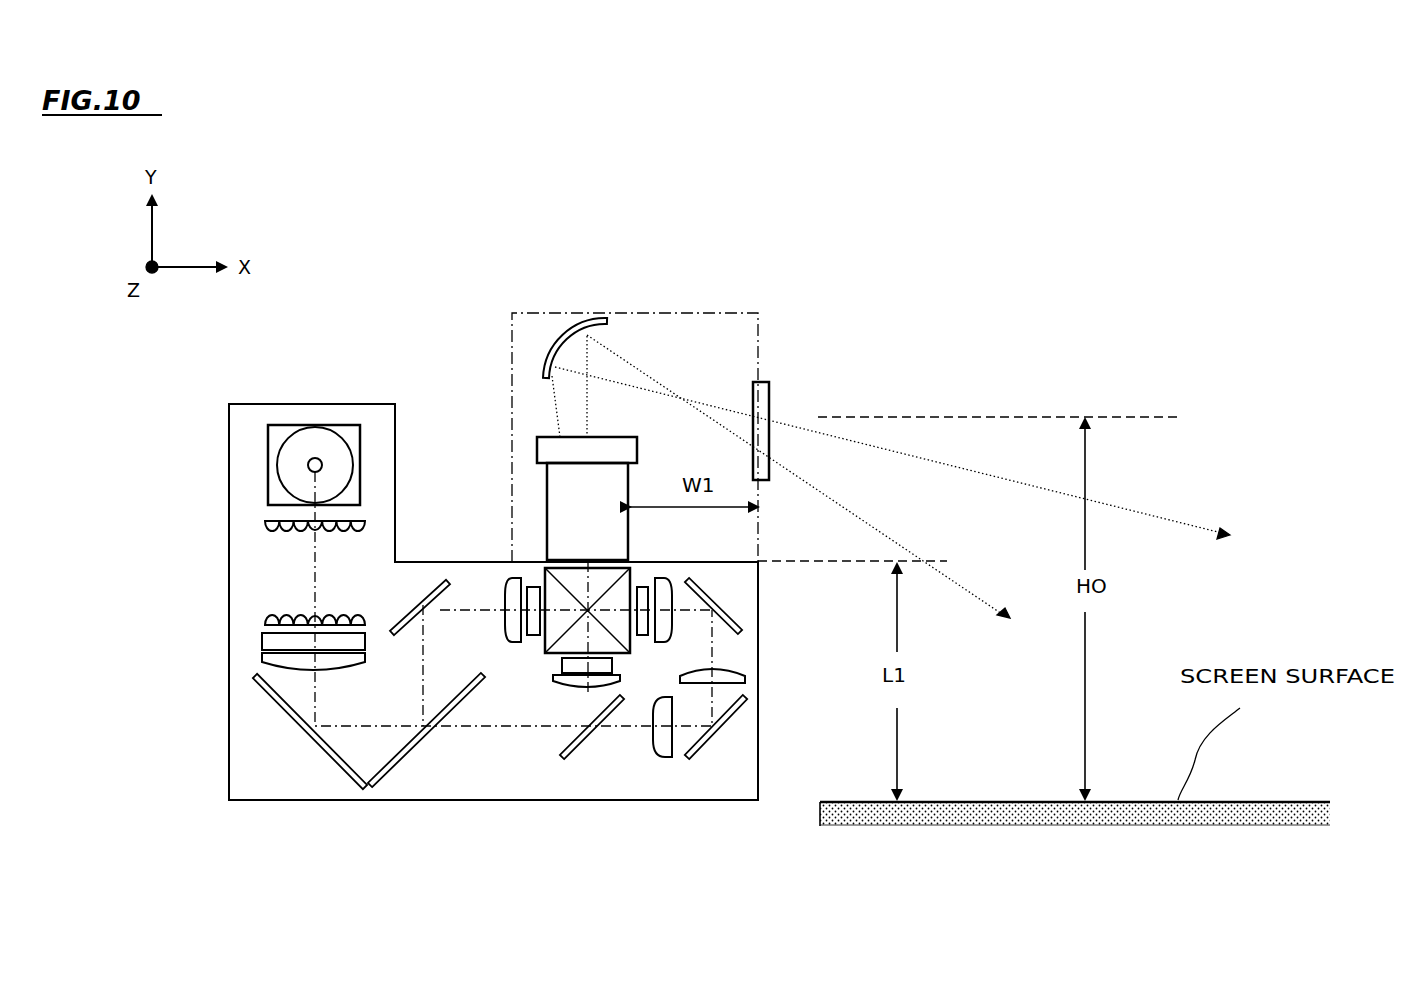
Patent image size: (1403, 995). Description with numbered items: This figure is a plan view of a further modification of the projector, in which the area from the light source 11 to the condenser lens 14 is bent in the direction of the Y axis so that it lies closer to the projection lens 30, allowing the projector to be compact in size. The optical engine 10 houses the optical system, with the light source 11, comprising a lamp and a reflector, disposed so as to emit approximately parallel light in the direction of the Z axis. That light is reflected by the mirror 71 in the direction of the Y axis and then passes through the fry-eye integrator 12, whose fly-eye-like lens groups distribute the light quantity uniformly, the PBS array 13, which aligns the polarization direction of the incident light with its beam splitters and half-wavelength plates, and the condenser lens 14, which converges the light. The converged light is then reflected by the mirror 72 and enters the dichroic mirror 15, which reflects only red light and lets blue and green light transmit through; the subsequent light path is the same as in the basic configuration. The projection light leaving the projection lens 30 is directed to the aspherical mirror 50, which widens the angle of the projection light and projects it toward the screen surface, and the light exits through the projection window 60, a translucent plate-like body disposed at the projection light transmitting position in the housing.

The optical engine 10 is at (338, 404).
The light source 11 is at (277, 458).
The fry-eye integrator 12 is at (262, 527).
The PBS array 13 is at (255, 640).
The condenser lens 14 is at (255, 663).
The dichroic mirror 15 is at (420, 738).
The projection lens 30 is at (557, 527).
The aspherical mirror 50 is at (557, 343).
The projection window 60 is at (770, 395).
The mirror 71 is at (268, 482).
The mirror 72 is at (297, 722).